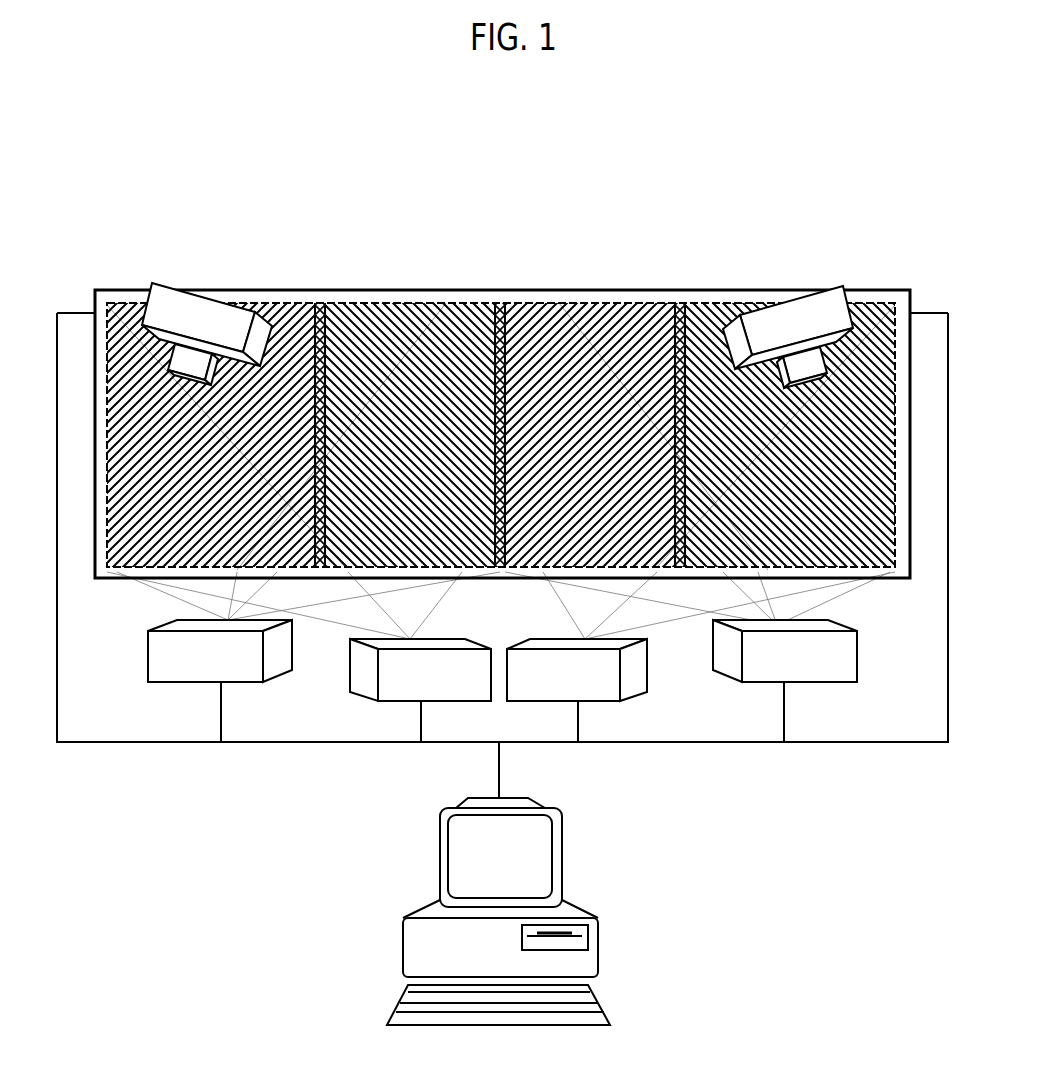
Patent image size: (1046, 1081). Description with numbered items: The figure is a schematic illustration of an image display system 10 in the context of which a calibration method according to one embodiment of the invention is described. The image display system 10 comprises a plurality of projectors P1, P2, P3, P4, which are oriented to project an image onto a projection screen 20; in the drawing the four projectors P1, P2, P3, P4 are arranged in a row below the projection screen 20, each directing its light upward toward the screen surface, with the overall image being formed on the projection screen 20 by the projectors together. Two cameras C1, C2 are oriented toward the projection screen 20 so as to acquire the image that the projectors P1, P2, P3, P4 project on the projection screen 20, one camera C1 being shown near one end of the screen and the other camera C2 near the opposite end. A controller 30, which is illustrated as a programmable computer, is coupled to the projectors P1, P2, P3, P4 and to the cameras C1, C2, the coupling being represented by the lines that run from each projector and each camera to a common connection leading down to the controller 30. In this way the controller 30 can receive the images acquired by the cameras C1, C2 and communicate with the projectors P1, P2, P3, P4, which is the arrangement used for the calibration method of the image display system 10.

The image display system 10 is at (712, 133).
The projection screen 20 is at (300, 290).
The controller 30 is at (587, 912).
The camera C1 is at (207, 334).
The camera C2 is at (788, 337).
The projector P1 is at (220, 651).
The projector P2 is at (420, 670).
The projector P3 is at (577, 670).
The projector P4 is at (785, 651).